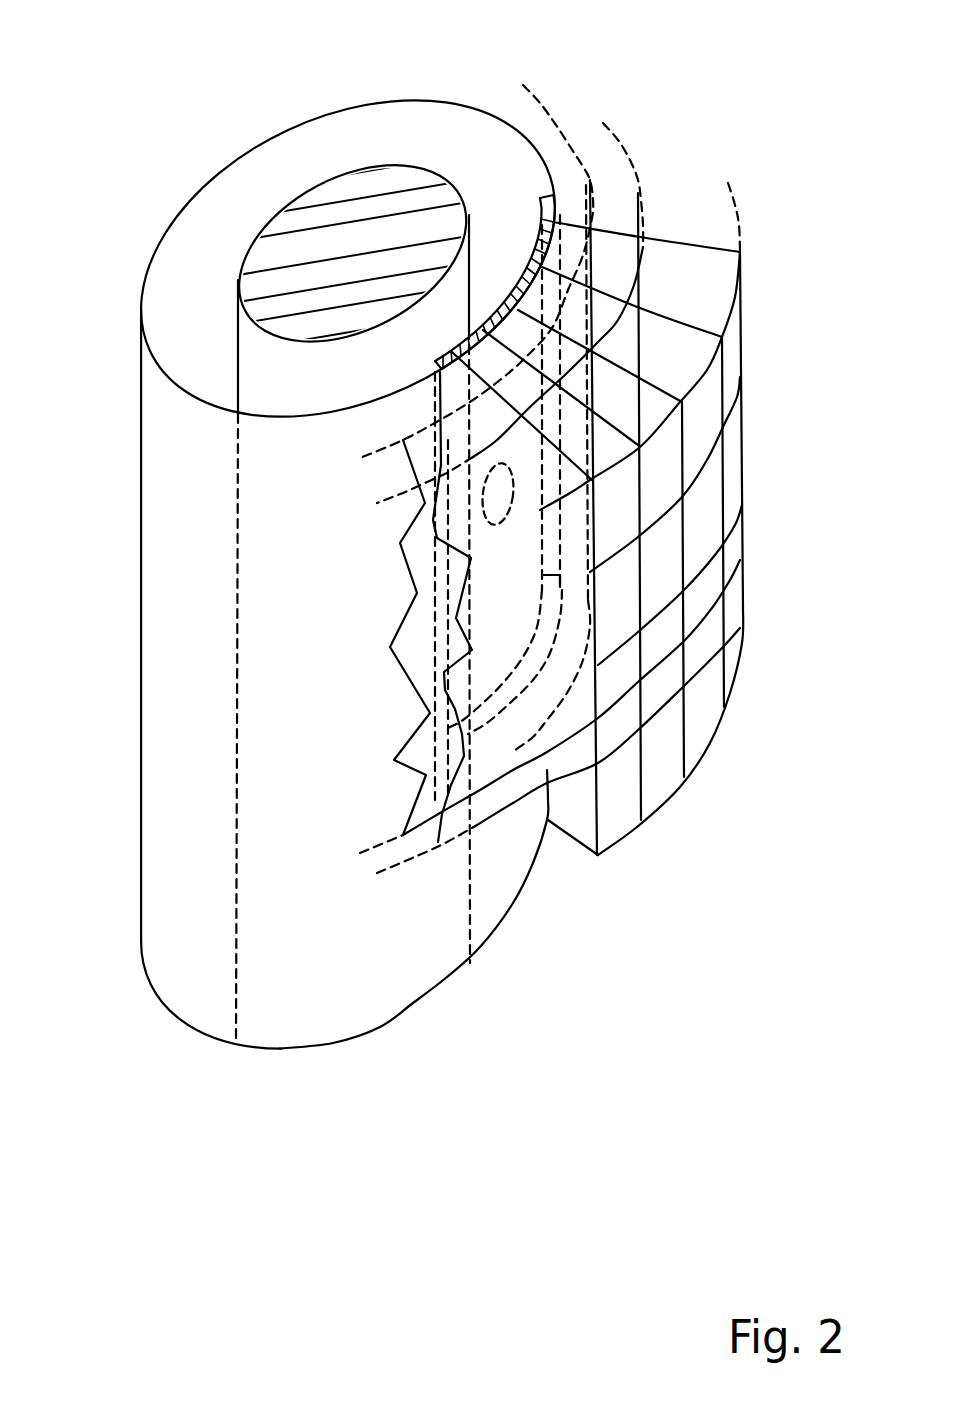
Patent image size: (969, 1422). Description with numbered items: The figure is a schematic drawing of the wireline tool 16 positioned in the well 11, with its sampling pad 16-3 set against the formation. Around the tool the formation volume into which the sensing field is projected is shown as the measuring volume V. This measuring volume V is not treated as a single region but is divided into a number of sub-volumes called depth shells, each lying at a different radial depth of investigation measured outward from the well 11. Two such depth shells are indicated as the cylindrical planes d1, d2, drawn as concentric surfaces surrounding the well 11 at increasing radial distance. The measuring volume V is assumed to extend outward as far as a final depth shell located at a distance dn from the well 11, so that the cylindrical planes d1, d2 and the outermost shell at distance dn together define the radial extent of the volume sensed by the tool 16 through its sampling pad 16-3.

The wireline tool 16 is at (329, 133).
The well 11 is at (172, 233).
The sampling pad 16-3 is at (541, 195).
The cylindrical plane d1 is at (550, 455).
The cylindrical plane d2 is at (558, 481).
The distance of outermost depth shell dn is at (728, 371).
The measuring volume V is at (574, 782).